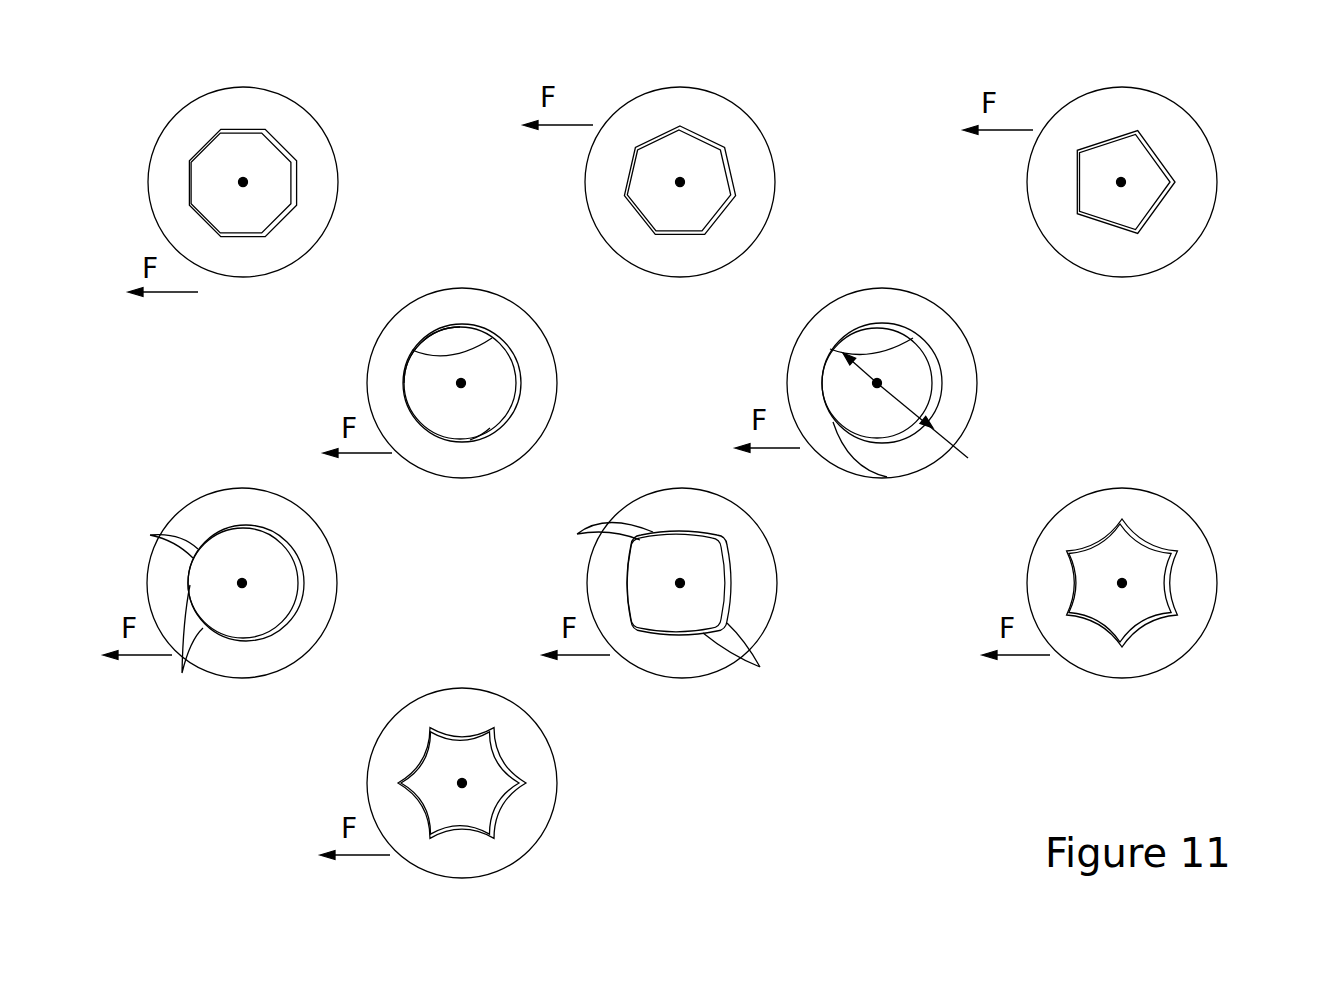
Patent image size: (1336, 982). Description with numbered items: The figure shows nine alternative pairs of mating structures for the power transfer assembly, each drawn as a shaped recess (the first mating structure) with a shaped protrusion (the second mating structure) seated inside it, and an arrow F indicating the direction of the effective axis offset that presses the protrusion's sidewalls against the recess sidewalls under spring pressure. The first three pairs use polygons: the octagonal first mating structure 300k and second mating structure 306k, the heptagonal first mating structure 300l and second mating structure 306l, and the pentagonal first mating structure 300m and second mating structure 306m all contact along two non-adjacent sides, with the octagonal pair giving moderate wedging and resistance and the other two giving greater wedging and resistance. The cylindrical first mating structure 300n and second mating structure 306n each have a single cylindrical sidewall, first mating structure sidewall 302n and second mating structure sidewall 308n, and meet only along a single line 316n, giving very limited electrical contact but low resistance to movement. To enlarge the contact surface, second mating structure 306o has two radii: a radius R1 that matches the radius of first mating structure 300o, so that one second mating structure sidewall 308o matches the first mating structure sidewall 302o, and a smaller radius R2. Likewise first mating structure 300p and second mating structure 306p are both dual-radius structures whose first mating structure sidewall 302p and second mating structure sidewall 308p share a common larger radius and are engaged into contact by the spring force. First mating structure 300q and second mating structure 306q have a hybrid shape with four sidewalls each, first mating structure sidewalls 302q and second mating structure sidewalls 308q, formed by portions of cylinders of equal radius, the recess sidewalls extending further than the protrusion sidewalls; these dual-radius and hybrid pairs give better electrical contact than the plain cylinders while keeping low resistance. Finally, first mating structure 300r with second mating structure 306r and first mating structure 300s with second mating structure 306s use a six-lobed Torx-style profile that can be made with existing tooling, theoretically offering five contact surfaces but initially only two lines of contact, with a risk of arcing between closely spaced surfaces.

The second mating structure 306k is at (284, 150).
The first mating structure 300k is at (290, 195).
The second mating structure 306l is at (728, 145).
The first mating structure 300l is at (733, 190).
The second mating structure 306m is at (1160, 156).
The first mating structure 300m is at (1168, 186).
The first mating structure sidewall 302n is at (412, 350).
The single line 316n is at (404, 383).
The second mating structure 306n is at (517, 354).
The first mating structure 300n is at (520, 395).
The second mating structure sidewall 308n is at (490, 428).
The first mating structure sidewall 302o is at (830, 349).
The second mating structure 306o is at (944, 364).
The first mating structure 300o is at (937, 390).
The second mating structure sidewall 308o is at (887, 477).
The radius R1 is at (920, 376).
The radius R2 is at (1015, 458).
The first mating structure sidewall 302p is at (141, 529).
The second mating structure sidewall 308p is at (190, 644).
The second mating structure 306p is at (301, 553).
The first mating structure 300p is at (297, 598).
The first mating structure sidewall 302q is at (583, 542).
The second mating structure sidewall 308q is at (768, 654).
The second mating structure 306q is at (730, 553).
The first mating structure 300q is at (731, 600).
The second mating structure 306r is at (1184, 547).
The first mating structure 300r is at (1170, 600).
The second mating structure 306s is at (505, 757).
The first mating structure 300s is at (513, 795).